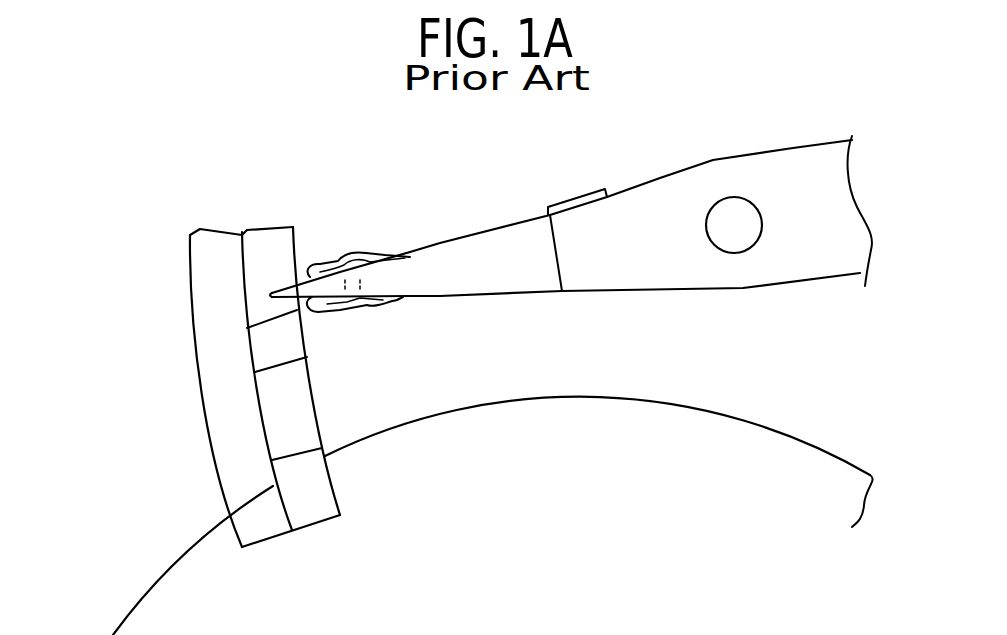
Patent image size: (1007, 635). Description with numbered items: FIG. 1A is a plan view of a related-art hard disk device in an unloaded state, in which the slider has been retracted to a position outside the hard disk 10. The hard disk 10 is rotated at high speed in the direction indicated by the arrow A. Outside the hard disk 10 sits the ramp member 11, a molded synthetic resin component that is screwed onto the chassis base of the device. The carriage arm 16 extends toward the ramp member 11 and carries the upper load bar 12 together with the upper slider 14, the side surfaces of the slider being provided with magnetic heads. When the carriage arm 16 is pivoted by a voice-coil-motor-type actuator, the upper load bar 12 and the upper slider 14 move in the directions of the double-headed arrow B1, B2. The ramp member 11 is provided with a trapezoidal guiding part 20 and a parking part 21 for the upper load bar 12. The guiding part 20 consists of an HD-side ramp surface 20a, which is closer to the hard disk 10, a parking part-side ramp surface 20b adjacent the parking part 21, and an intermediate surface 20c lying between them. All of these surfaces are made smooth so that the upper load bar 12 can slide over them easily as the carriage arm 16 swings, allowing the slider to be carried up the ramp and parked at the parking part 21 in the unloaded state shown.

The hard disk 10 is at (820, 468).
The ramp member 11 is at (166, 343).
The upper load bar 12 is at (280, 287).
The upper slider 14 is at (370, 243).
The carriage arm 16 is at (645, 190).
The trapezoidal guiding part 20 is at (245, 428).
The HD-side ramp surface 20a is at (303, 492).
The parking part-side ramp surface 20b is at (268, 343).
The intermediate surface 20c is at (275, 397).
The parking part 21 is at (262, 267).
The rotation direction arrow A is at (688, 381).
The load bar movement direction B1 is at (350, 328).
The load bar movement direction B2 is at (357, 372).